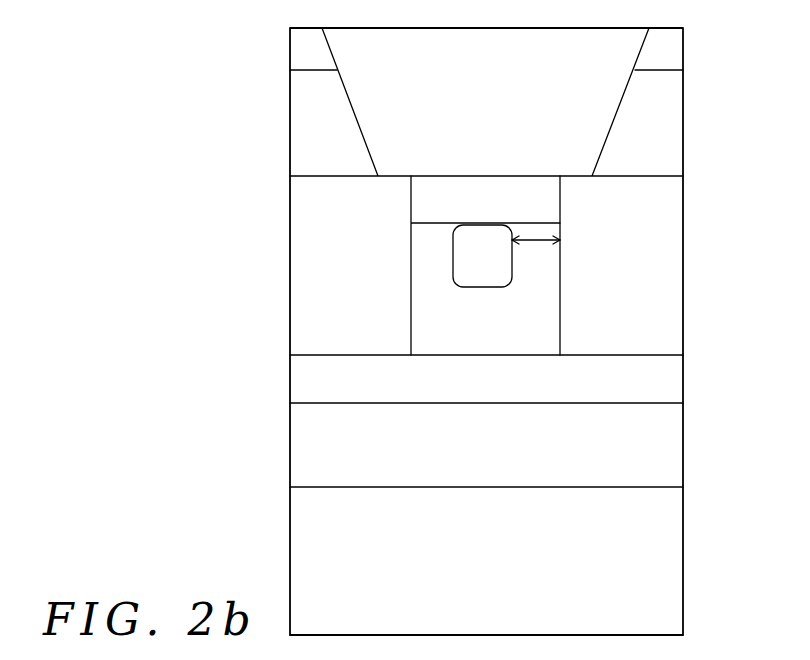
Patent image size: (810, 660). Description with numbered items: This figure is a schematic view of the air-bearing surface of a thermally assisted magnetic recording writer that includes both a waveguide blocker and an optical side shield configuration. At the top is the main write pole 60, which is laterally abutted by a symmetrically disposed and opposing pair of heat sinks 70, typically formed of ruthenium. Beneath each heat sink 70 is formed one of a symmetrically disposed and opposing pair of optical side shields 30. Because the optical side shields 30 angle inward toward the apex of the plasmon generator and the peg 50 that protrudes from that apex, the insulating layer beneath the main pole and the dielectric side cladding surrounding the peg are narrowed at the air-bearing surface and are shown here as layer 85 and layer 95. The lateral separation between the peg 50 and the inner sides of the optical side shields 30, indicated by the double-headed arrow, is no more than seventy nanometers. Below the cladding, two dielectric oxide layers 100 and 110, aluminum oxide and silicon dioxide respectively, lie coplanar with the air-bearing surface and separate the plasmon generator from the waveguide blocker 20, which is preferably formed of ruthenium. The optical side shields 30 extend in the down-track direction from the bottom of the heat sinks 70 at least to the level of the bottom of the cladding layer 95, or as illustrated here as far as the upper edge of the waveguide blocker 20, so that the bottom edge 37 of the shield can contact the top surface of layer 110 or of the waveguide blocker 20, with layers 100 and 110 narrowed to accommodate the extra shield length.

The waveguide blocker 20 is at (665, 566).
The optical side shield 30 is at (670, 201).
The bottom edge of the optical side shield 37 is at (650, 355).
The peg 50 is at (502, 261).
The main write pole 60 is at (620, 50).
The heat sink 70 is at (670, 106).
The insulating layer 85 is at (427, 213).
The dielectric side cladding layer 95 is at (427, 330).
The dielectric oxide layer 100 is at (670, 381).
The dielectric oxide layer 110 is at (670, 445).